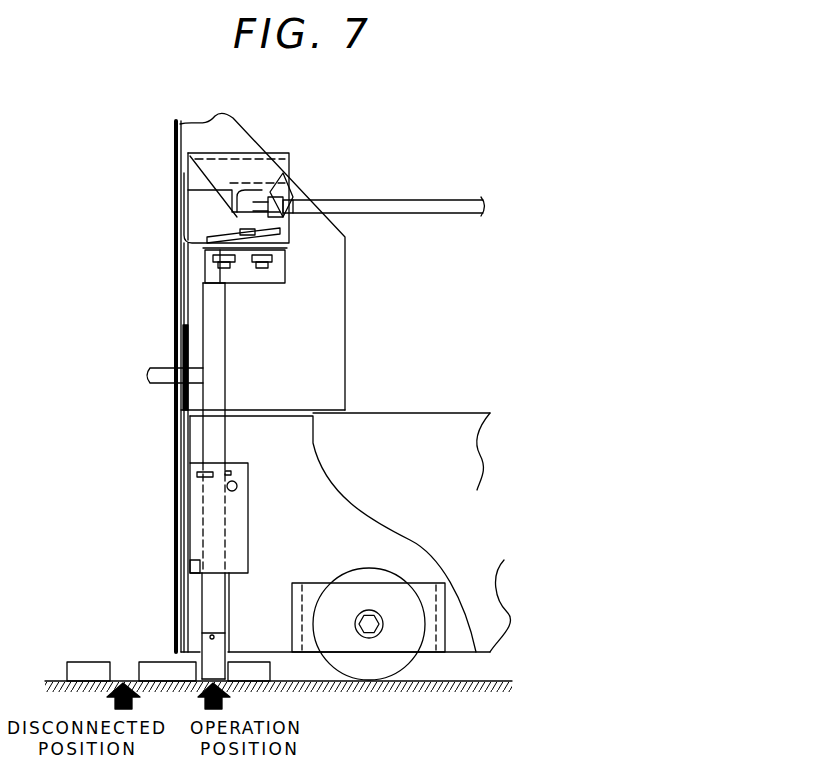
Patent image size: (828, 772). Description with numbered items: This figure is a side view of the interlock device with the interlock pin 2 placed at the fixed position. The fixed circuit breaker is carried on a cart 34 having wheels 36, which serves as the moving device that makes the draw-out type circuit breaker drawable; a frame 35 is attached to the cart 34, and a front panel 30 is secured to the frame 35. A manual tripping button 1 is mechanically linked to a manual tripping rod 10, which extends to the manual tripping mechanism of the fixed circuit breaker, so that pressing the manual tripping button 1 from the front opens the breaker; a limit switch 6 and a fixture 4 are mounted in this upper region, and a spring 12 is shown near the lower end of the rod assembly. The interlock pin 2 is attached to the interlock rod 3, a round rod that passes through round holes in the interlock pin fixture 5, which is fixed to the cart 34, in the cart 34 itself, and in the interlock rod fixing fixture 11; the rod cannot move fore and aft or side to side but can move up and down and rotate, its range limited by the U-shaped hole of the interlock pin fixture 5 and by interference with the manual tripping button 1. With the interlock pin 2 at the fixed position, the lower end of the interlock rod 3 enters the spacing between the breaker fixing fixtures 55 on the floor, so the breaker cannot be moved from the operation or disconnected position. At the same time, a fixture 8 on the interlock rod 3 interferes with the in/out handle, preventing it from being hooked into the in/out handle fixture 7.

The front panel 30 is at (175, 133).
The manual tripping button 1 is at (178, 207).
The limit switch 6 is at (292, 205).
The manual tripping rod 10 is at (397, 205).
The interlock pin fixture 5 is at (183, 325).
The interlock pin 2 is at (157, 367).
The interlock rod 3 is at (222, 392).
The fixture 4 is at (267, 277).
The frame 35 is at (332, 347).
The cart 34 is at (408, 420).
The fixture 8 is at (227, 473).
The in/out handle fixture 7 is at (237, 485).
The interlock rod fixing fixture 11 is at (238, 555).
The spring 12 is at (227, 612).
The breaker fixing fixture 55 is at (88, 662).
The wheel 36 is at (392, 663).